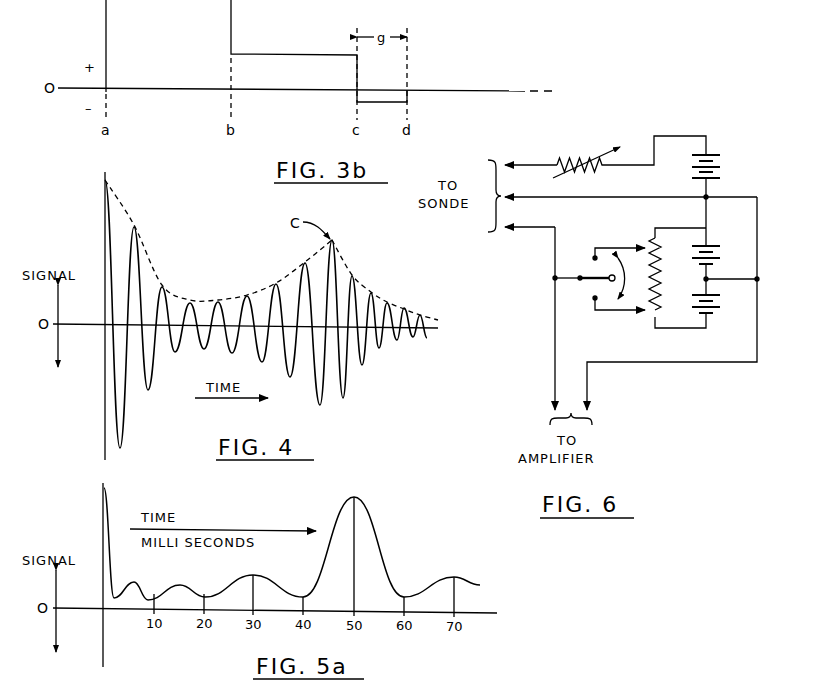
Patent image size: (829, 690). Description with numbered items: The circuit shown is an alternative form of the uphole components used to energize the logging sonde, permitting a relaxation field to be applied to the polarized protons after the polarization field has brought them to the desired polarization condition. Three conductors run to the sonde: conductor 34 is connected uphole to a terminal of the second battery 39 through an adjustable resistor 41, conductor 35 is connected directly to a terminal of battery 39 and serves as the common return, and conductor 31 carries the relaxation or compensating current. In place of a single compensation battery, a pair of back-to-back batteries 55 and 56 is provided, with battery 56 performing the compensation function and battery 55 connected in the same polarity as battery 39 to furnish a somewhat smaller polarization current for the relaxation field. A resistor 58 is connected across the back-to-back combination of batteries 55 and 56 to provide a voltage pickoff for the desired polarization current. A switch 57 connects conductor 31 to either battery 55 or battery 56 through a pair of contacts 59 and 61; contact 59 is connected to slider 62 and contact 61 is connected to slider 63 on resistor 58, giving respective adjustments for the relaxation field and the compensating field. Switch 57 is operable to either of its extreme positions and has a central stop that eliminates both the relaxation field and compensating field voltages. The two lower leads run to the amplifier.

The conductor 31 is at (524, 227).
The conductor 34 is at (525, 165).
The conductor 35 is at (622, 197).
The second battery 39 is at (720, 159).
The adjustable resistor 41 is at (571, 160).
The battery 55 is at (718, 253).
The battery 56 is at (718, 308).
The switch 57 is at (600, 281).
The resistor 58 is at (661, 296).
The contact 59 is at (594, 257).
The contact 61 is at (594, 299).
The slider 62 is at (642, 246).
The slider 63 is at (643, 313).